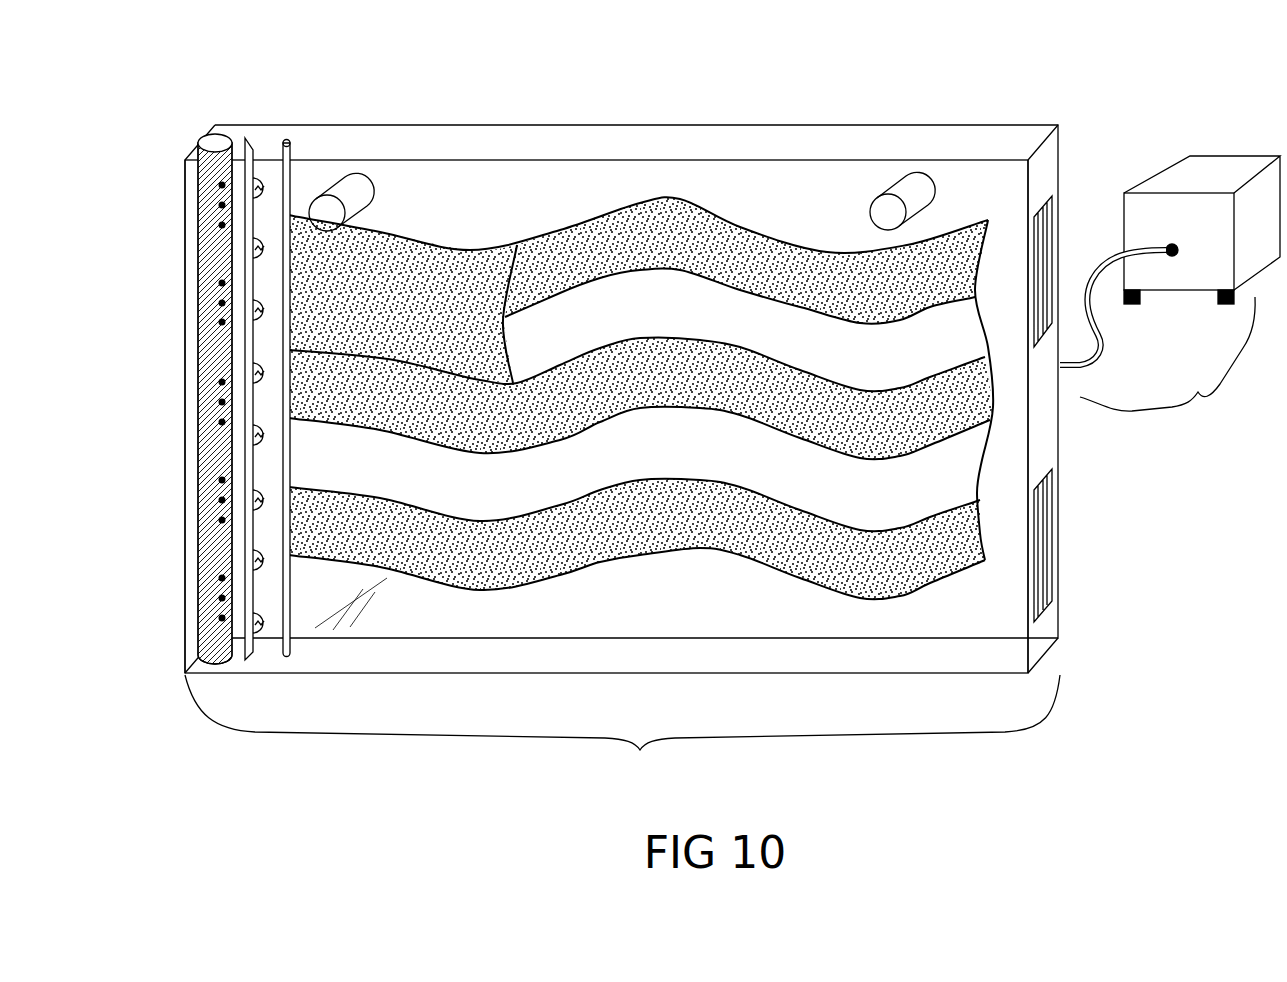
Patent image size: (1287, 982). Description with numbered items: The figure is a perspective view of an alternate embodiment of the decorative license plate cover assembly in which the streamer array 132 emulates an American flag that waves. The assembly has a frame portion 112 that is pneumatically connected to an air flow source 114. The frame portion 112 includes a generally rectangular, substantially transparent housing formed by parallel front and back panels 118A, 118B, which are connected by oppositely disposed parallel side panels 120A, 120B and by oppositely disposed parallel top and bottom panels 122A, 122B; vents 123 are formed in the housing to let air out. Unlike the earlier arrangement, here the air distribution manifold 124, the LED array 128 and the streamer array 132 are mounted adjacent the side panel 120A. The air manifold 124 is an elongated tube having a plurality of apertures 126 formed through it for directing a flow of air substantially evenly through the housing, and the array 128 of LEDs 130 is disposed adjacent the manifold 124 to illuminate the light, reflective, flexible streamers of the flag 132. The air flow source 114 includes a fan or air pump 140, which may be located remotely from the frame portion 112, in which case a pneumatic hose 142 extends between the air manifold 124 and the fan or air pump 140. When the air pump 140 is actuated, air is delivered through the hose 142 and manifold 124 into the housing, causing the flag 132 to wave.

The frame portion 112 is at (621, 414).
The air flow source 114 is at (1170, 294).
The front panel 118A is at (530, 187).
The back panel 118B is at (925, 140).
The side panel 120A is at (185, 366).
The side panel 120B is at (1040, 437).
The top panel 122A is at (763, 137).
The bottom panel 122B is at (858, 655).
The vents 123 is at (1048, 206).
The air distribution manifold 124 is at (212, 147).
The apertures 126 is at (222, 225).
The array of LEDs 128 is at (247, 658).
The LEDs 130 is at (257, 245).
The array of streamers 132 is at (447, 555).
The fan or air pump 140 is at (1156, 229).
The pneumatic hose 142 is at (1098, 312).